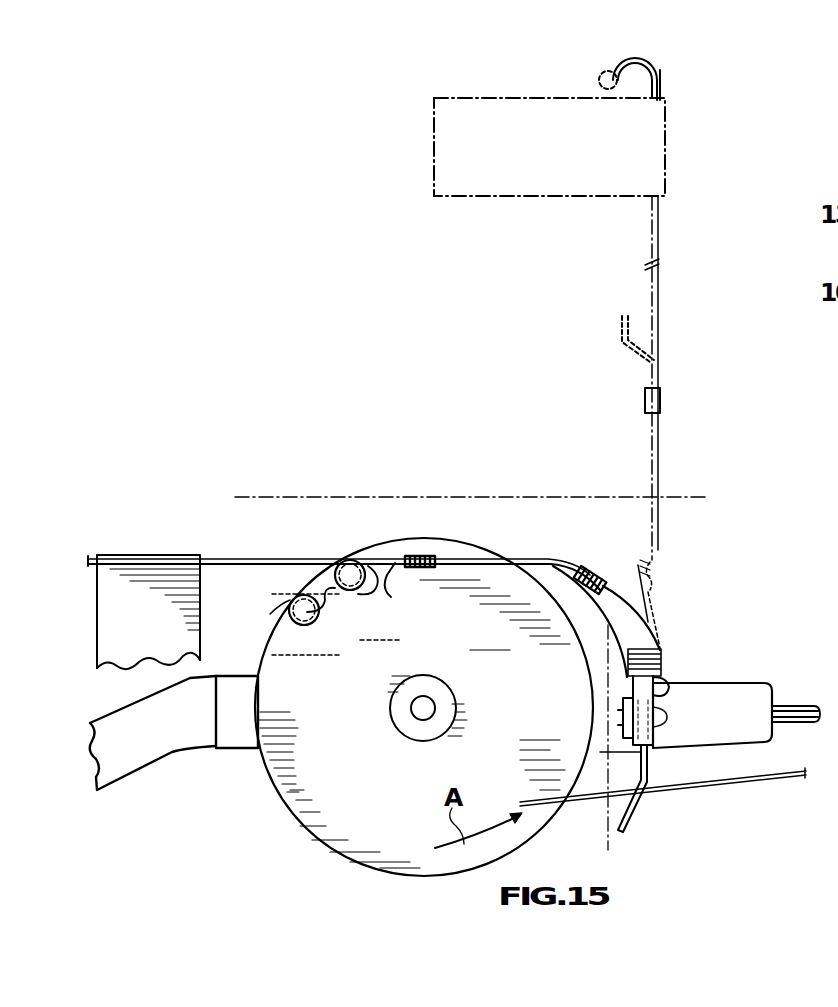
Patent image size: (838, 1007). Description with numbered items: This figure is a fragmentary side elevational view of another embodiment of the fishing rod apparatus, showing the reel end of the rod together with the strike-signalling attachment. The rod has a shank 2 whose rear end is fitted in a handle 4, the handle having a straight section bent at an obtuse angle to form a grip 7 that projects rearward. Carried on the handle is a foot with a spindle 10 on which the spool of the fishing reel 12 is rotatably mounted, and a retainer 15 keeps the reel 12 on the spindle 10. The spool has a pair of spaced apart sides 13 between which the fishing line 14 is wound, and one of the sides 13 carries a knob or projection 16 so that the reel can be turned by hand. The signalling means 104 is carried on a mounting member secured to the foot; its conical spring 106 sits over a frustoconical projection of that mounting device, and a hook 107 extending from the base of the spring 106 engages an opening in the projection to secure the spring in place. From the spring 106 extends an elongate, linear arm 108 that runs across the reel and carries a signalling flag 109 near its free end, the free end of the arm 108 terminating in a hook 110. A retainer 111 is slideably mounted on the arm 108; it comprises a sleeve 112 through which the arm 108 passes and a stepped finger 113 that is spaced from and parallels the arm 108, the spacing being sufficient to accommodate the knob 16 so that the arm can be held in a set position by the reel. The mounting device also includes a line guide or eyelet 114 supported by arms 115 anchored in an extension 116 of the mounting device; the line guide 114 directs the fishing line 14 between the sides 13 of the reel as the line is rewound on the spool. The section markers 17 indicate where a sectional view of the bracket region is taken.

The shank 2 is at (800, 712).
The handle 4 is at (741, 690).
The grip 7 is at (135, 765).
The spindle 10 is at (437, 700).
The fishing reel 12 is at (284, 826).
The sides 13 is at (395, 820).
The fishing line 14 is at (808, 774).
The retainer 15 is at (440, 727).
The knob or projection 16 is at (238, 522).
The dimension / section line 17 is at (608, 637).
The signalling means 104 is at (678, 579).
The conical spring 106 is at (638, 563).
The hook 107 is at (672, 690).
The arm 108 is at (302, 561).
The signalling flag 109 is at (180, 630).
The hook 110 is at (665, 74).
The retainer 111 is at (630, 362).
The sleeve 112 is at (663, 403).
The stepped finger 113 is at (618, 331).
The line guide or eyelet 114 is at (634, 802).
The arms 115 is at (640, 771).
The extension 116 is at (650, 744).